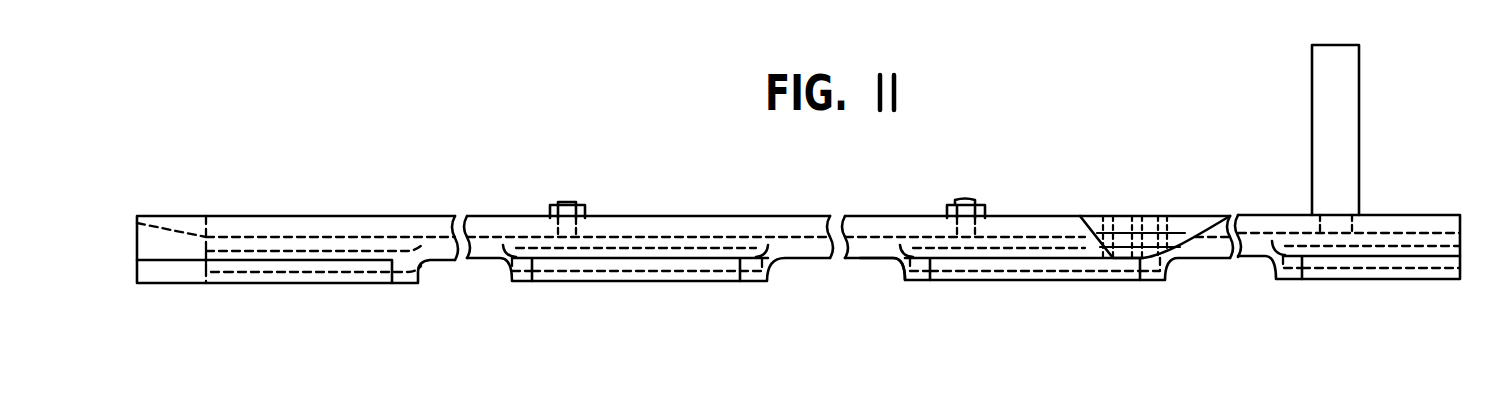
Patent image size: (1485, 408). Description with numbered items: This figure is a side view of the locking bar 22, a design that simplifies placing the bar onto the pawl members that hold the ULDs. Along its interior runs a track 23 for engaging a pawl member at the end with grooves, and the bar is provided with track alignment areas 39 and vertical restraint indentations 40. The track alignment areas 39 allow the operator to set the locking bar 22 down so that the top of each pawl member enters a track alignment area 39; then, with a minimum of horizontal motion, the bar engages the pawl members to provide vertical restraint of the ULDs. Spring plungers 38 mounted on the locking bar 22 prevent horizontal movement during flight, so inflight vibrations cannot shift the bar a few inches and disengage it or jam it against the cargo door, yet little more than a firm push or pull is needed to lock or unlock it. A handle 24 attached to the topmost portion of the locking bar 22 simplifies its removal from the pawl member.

The locking bar 22 is at (915, 295).
The track 23 is at (646, 250).
The handle 24 is at (1360, 98).
The spring plungers 38 is at (578, 203).
The track alignment areas 39 is at (803, 238).
The vertical restraint indentations 40 is at (870, 268).